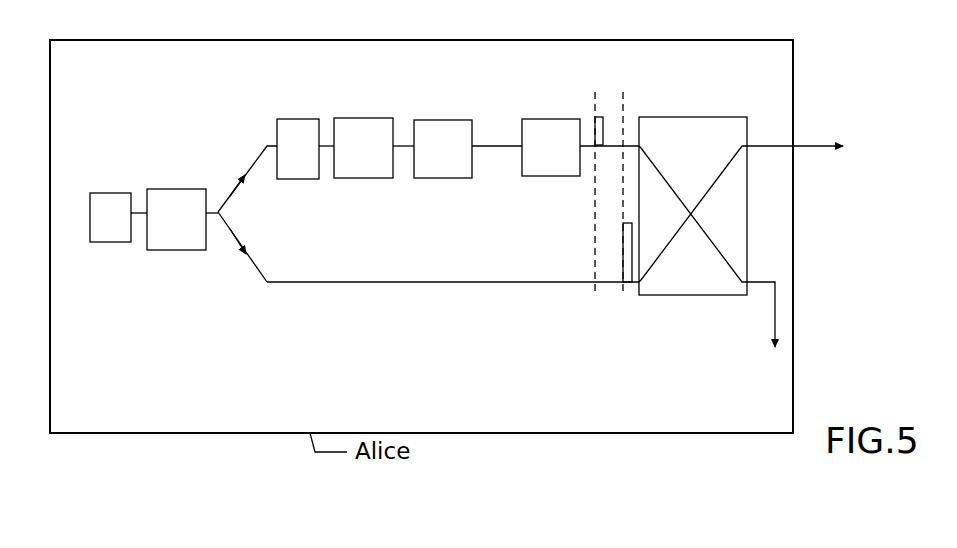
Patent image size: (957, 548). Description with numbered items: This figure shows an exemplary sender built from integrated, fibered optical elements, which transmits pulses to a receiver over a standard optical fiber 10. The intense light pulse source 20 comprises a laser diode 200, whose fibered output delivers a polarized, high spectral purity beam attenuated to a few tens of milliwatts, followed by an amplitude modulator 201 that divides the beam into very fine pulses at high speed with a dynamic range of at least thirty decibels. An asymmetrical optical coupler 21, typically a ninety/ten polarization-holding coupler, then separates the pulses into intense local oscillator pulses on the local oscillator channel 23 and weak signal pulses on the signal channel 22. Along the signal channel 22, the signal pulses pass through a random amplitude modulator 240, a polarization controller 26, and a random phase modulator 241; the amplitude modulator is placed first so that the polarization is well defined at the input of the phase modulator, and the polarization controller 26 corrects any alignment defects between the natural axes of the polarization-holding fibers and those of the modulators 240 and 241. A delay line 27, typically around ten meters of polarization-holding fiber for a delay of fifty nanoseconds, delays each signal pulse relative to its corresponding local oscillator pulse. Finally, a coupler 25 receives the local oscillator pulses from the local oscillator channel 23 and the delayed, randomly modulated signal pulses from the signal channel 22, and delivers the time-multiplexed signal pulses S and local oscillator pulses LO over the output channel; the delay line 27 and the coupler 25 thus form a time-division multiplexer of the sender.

The optical fiber 10 is at (810, 138).
The intense light pulse source 20 is at (125, 145).
The laser diode 200 is at (90, 193).
The amplitude modulator 201 is at (170, 190).
The asymmetrical optical coupler 21 is at (235, 250).
The signal channel 22 is at (262, 167).
The local oscillator channel 23 is at (360, 283).
The random amplitude modulator 240 is at (305, 127).
The polarization controller 26 is at (367, 127).
The random phase modulator 241 is at (457, 120).
The delay line 27 is at (576, 118).
The coupler 25 is at (677, 282).
The signal pulses S is at (600, 118).
The local oscillator pulses LO is at (627, 252).